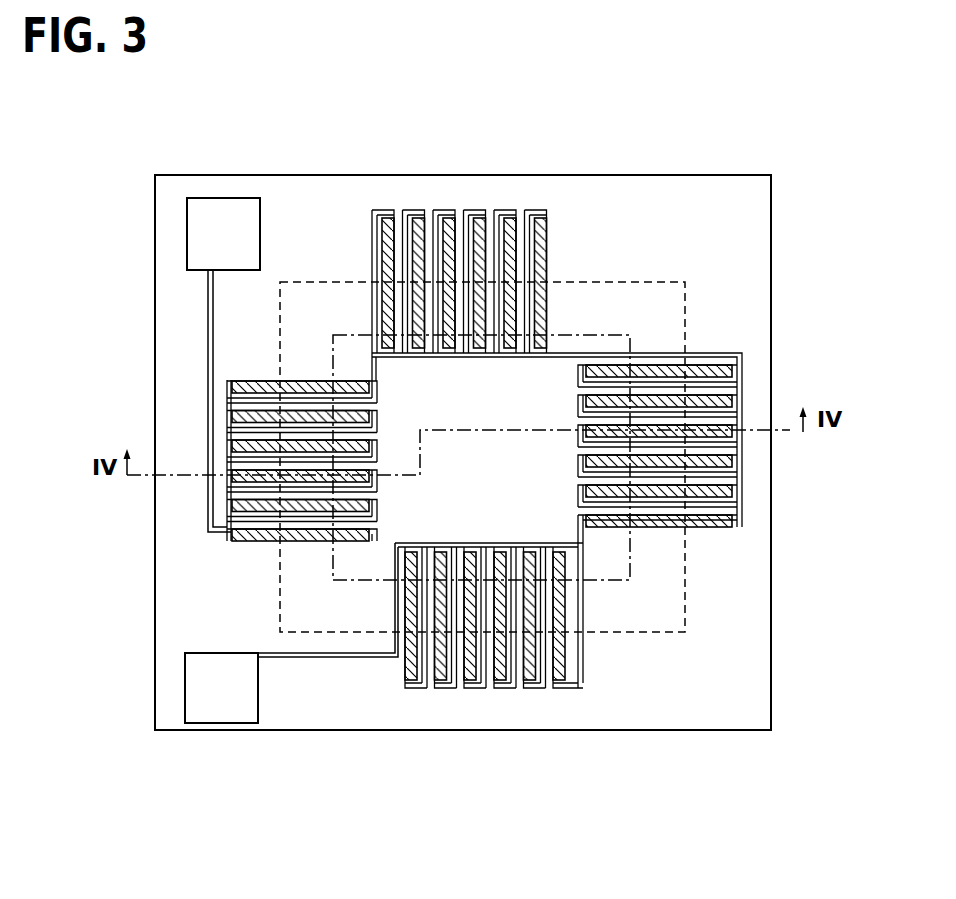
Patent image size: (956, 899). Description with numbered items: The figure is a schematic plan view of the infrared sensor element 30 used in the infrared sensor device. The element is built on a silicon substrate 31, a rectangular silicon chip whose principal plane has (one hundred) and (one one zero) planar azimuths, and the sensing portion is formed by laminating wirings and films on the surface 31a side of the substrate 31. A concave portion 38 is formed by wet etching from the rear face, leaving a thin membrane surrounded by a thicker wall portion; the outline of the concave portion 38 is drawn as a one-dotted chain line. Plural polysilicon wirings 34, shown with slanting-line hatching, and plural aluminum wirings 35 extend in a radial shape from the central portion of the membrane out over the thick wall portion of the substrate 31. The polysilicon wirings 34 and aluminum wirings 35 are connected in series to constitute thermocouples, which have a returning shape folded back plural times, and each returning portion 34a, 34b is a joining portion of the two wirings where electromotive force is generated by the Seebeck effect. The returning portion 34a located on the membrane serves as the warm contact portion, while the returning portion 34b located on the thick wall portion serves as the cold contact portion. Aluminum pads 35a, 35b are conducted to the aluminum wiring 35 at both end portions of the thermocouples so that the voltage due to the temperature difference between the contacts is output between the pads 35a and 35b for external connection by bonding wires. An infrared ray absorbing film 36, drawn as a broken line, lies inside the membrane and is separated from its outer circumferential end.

The infrared sensor element 30 is at (646, 140).
The silicon substrate 31 is at (705, 168).
The surface of the silicon substrate 31a is at (600, 202).
The polysilicon wiring 34 is at (412, 449).
The returning portion (warm contact portion) 34a is at (373, 411).
The returning portion (cold contact portion) 34b is at (253, 392).
The aluminum wiring 35 is at (226, 424).
The aluminum pad 35a is at (219, 707).
The aluminum pad 35b is at (221, 213).
The infrared ray absorbing film 36 is at (630, 336).
The concave portion 38 is at (688, 292).